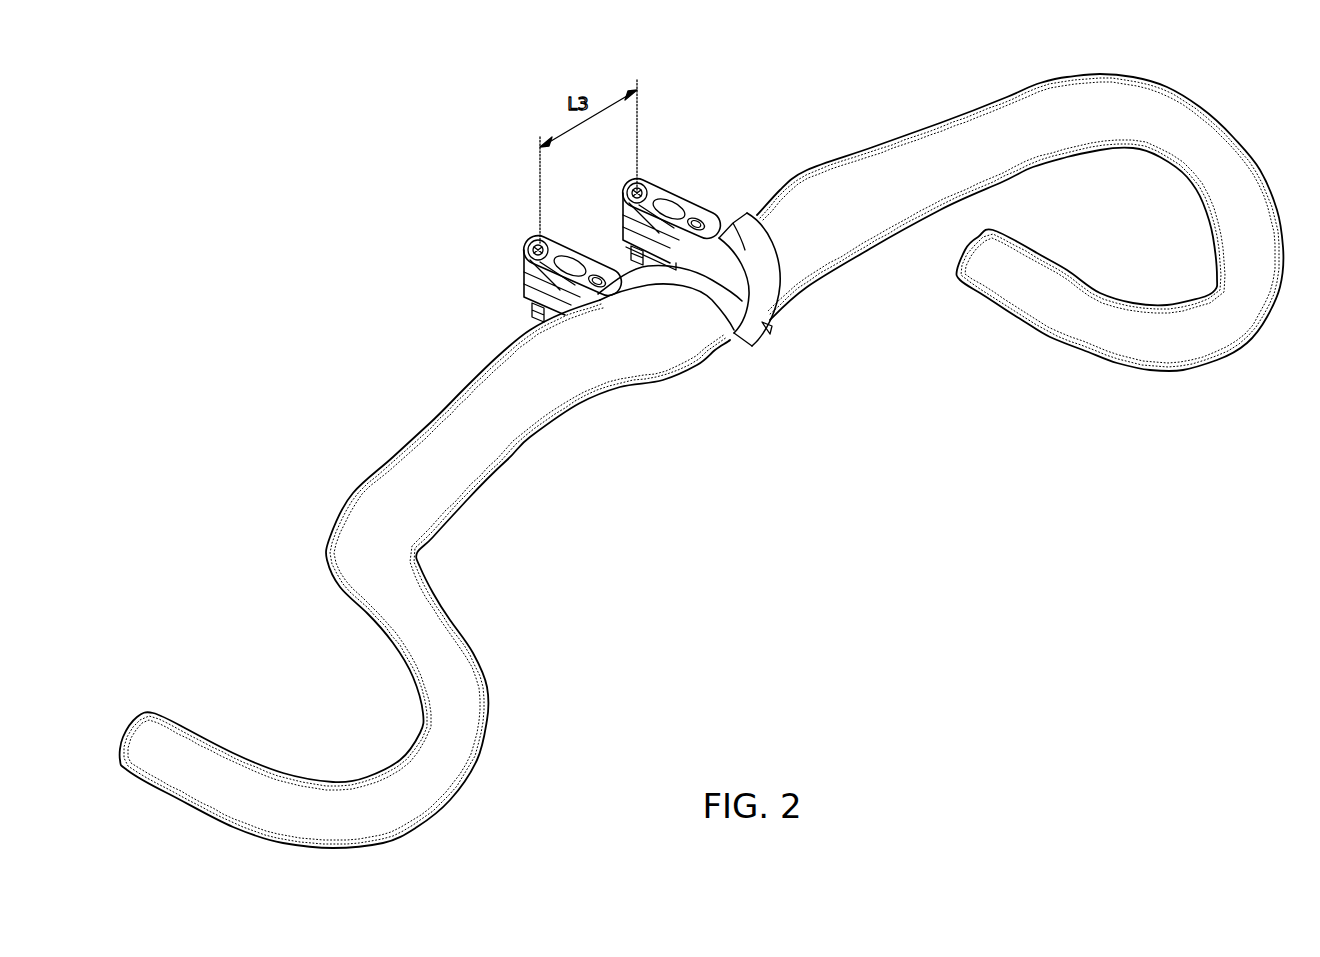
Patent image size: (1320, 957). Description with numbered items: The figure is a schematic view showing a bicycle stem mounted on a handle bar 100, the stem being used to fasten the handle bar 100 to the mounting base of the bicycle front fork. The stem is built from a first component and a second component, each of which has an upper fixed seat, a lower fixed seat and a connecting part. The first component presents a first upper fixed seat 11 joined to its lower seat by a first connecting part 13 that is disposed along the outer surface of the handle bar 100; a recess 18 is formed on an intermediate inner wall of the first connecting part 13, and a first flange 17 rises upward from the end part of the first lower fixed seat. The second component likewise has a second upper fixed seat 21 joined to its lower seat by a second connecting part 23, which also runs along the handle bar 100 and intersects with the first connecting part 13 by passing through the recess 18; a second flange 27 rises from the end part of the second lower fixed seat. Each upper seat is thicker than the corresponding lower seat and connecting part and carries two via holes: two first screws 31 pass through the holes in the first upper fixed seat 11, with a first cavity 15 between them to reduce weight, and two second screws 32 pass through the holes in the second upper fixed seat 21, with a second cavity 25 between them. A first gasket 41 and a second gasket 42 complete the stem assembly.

The handle bar 100 is at (817, 200).
The first upper fixed seat 11 is at (670, 203).
The first connecting part 13 is at (763, 300).
The first cavity 15 is at (672, 206).
The first flange 17 is at (520, 283).
The recess 18 is at (757, 330).
The second upper fixed seat 21 is at (540, 247).
The second connecting part 23 is at (720, 303).
The second cavity 25 is at (577, 263).
The second flange 27 is at (637, 247).
The first screw 31 is at (636, 190).
The second screw 32 is at (537, 247).
The first gasket 41 is at (623, 257).
The second gasket 42 is at (530, 307).